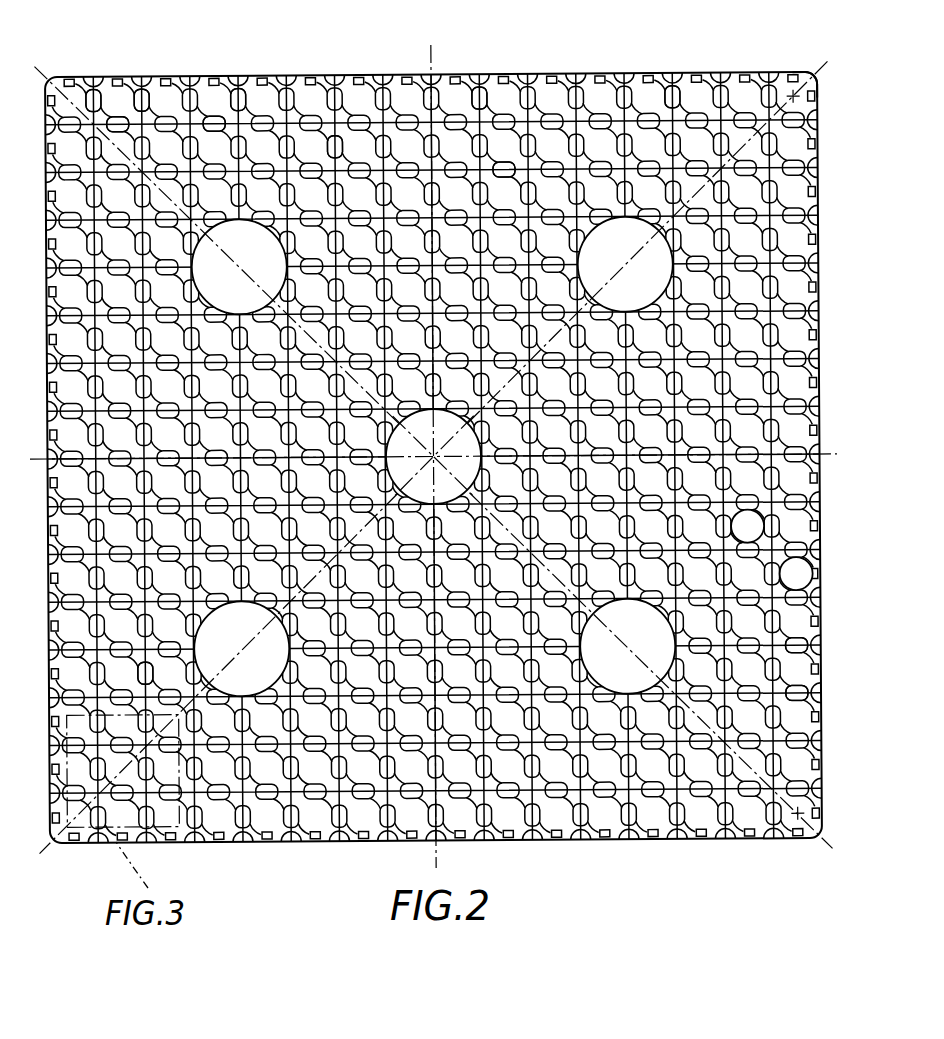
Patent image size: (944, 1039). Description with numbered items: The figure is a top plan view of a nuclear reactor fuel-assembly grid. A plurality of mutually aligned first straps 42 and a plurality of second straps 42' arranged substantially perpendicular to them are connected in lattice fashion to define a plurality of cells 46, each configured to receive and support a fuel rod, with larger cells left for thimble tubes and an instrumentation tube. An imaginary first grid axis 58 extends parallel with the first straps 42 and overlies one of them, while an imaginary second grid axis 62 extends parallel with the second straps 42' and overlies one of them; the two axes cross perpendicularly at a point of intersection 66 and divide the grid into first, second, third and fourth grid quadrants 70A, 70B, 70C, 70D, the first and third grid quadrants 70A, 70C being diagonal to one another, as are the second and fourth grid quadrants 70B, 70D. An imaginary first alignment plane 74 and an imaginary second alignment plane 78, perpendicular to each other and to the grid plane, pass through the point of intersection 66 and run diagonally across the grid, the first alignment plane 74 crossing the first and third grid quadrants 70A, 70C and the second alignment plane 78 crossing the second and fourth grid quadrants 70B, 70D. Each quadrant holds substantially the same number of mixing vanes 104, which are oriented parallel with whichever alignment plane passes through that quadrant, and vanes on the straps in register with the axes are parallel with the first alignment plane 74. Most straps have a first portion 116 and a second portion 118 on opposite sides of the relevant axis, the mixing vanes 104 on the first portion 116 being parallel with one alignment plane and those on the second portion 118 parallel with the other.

The first alignment plane 74 is at (53, 77).
The first portion 116 is at (121, 116).
The first straps 42 is at (209, 70).
The second straps 42' is at (212, 72).
The first grid axis 58 is at (432, 48).
The mixing vanes 104 is at (512, 157).
The second portion 118 is at (697, 117).
The second alignment plane 78 is at (815, 70).
The first grid quadrant 70A is at (44, 272).
The second grid quadrant 70B is at (822, 203).
The third grid quadrant 70C is at (823, 577).
The fourth grid quadrant 70D is at (42, 624).
The cells 46 is at (323, 160).
The point of intersection 66 is at (434, 457).
The second grid axis 62 is at (822, 455).